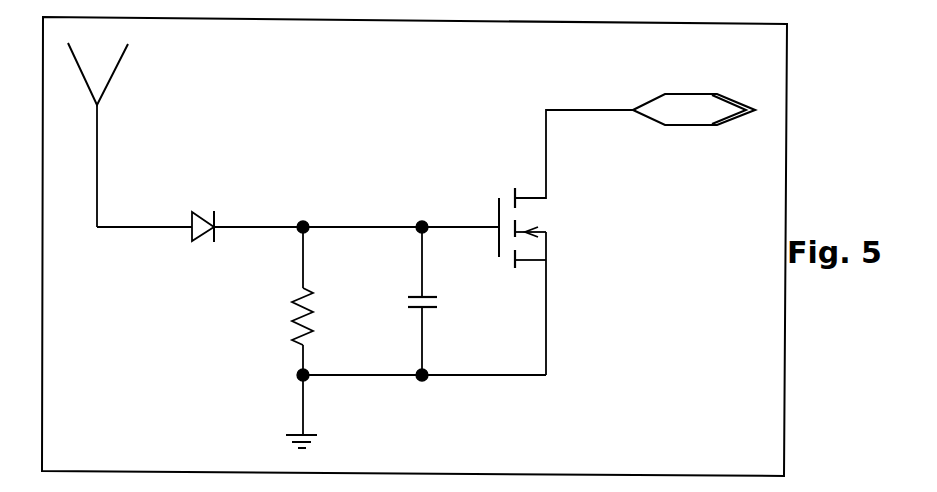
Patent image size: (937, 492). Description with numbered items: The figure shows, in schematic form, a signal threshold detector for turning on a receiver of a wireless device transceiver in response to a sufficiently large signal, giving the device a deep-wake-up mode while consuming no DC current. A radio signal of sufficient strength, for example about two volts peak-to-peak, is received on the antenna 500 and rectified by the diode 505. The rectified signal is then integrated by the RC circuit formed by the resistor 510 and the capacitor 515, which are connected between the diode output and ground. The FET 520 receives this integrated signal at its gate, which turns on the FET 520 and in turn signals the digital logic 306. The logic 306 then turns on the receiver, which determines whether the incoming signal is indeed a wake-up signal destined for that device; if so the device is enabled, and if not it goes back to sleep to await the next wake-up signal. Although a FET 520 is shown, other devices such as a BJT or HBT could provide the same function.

The antenna 500 is at (116, 135).
The diode 505 is at (202, 223).
The resistor 510 is at (297, 336).
The capacitor 515 is at (440, 301).
The FET 520 is at (566, 242).
The digital logic 306 is at (694, 122).